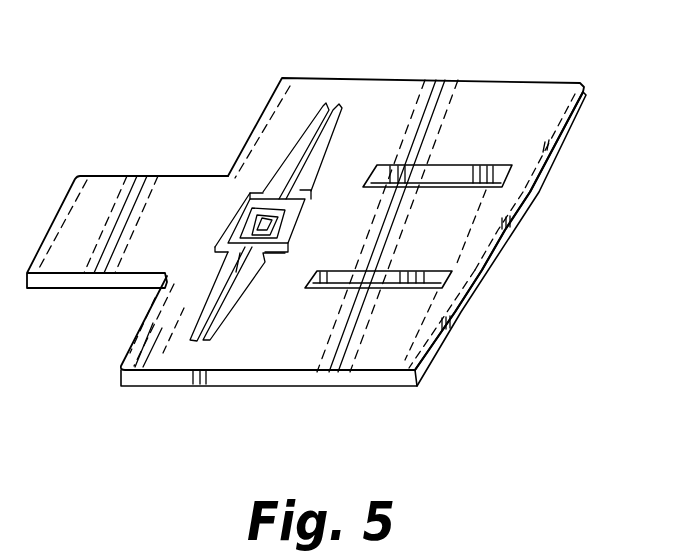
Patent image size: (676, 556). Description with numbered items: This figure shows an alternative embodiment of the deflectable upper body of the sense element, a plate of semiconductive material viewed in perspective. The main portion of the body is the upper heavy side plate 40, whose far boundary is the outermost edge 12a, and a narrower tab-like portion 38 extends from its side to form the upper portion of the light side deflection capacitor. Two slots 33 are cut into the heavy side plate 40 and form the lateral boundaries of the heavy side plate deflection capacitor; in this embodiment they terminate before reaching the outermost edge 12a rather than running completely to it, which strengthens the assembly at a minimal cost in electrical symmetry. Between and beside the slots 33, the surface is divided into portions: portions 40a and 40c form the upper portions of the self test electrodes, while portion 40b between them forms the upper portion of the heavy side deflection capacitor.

The upper heavy side plate 40 is at (372, 100).
The light side deflection capacitor portion 38 is at (158, 194).
The slots 33 is at (450, 170).
The self test electrode portion 40a is at (523, 138).
The heavy side deflection capacitor portion 40b is at (465, 220).
The self test electrode portion 40c is at (410, 328).
The outermost edge 12a is at (475, 279).